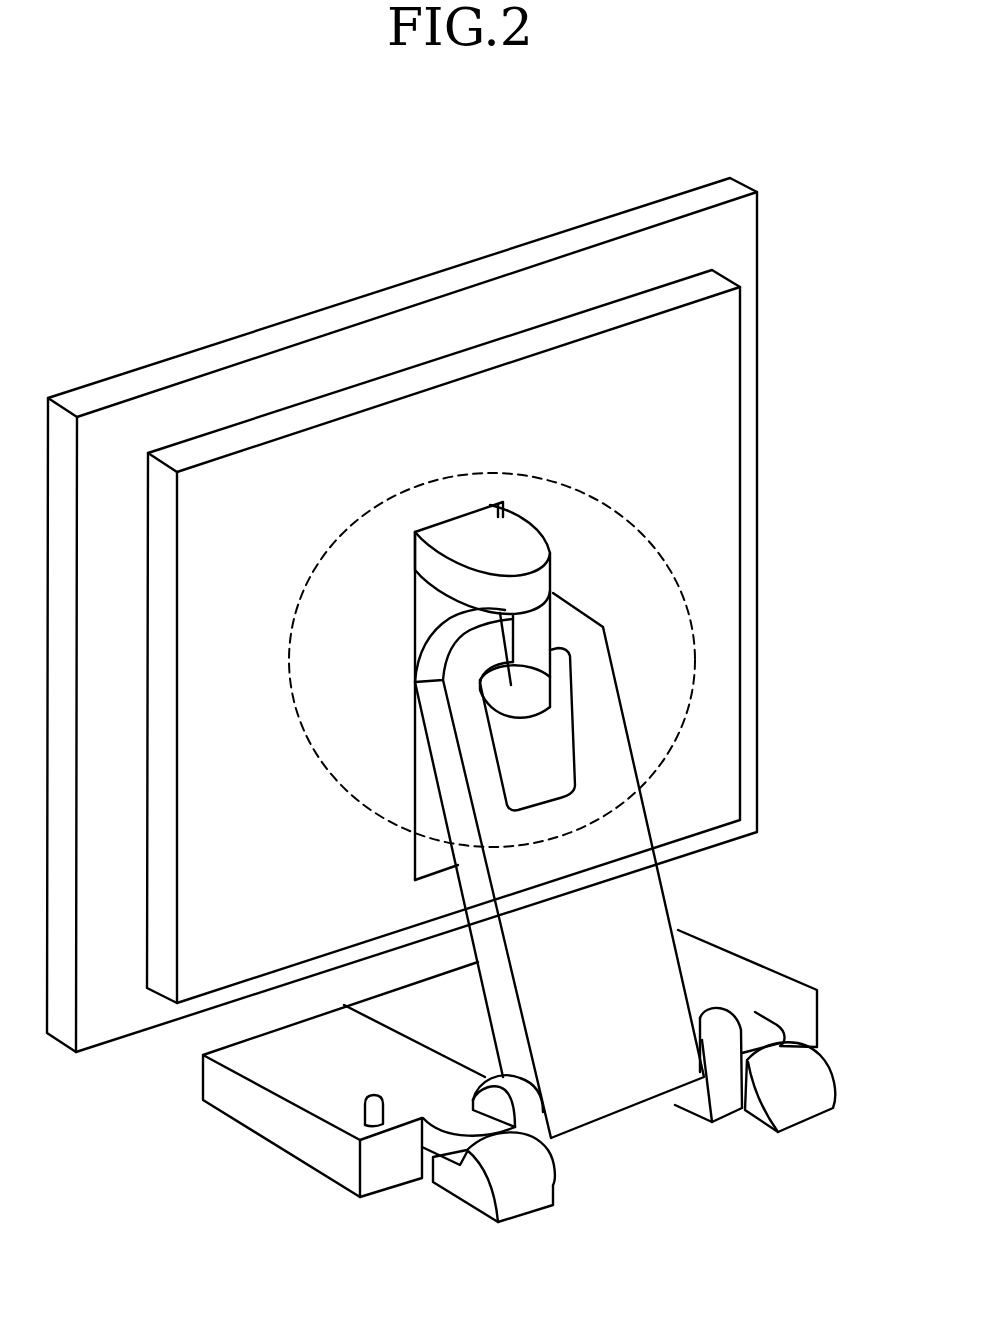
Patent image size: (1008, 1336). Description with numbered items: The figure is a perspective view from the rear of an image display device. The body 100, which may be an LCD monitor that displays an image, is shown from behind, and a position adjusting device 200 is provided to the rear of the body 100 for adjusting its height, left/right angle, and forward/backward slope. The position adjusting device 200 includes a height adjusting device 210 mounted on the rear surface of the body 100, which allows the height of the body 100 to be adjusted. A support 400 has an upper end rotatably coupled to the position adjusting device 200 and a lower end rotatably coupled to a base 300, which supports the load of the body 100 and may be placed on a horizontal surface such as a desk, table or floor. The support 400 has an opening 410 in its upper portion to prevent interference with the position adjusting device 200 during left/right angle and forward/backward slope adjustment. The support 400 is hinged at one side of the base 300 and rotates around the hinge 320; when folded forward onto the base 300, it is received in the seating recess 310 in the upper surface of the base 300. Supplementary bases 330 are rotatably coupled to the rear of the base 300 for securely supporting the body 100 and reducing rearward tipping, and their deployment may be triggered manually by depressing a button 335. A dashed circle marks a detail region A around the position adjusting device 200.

The body 100 is at (615, 207).
The position adjusting device 200 is at (547, 533).
The height adjusting device 210 is at (437, 805).
The base 300 is at (793, 975).
The seating recess 310 is at (412, 1015).
The hinge 320 is at (527, 1093).
The supplementary bases 330 is at (523, 1197).
The button 335 is at (368, 1107).
The support 400 is at (677, 900).
The opening 410 is at (588, 741).
The detail region A is at (697, 645).